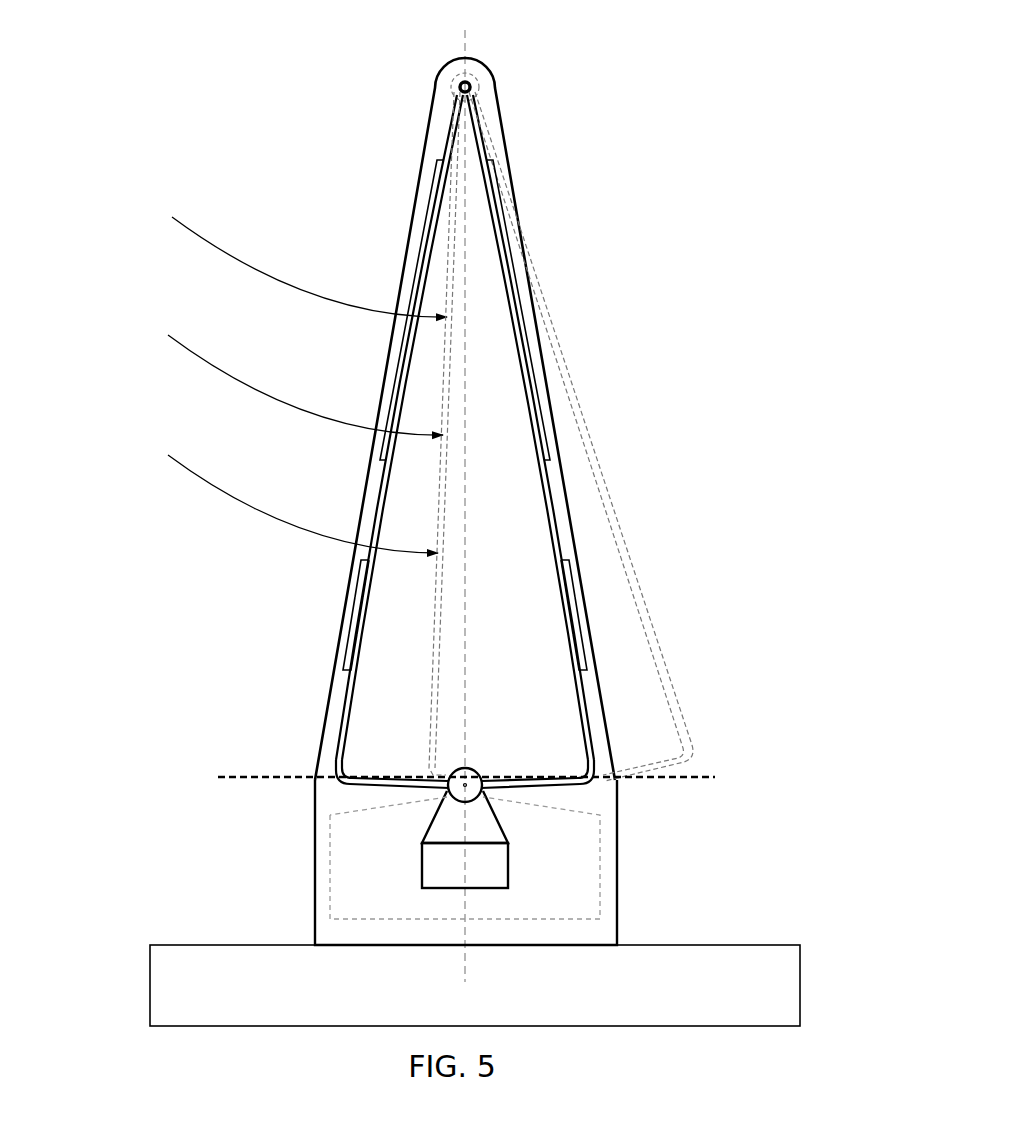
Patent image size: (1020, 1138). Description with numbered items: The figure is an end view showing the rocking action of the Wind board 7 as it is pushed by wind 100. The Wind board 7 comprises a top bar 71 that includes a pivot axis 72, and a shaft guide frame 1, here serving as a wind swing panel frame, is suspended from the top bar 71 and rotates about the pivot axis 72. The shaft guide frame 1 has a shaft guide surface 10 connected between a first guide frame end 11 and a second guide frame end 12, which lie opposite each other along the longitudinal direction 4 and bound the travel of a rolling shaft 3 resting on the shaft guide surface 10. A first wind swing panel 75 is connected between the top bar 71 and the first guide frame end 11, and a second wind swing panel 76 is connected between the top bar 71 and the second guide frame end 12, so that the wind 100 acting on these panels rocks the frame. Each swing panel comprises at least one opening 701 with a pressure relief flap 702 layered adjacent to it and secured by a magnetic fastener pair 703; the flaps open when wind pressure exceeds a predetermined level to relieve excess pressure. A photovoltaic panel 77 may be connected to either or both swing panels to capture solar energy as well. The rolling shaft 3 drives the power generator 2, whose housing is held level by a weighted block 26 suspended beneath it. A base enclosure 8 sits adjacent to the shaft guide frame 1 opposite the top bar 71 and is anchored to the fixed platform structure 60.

The Wind board 7 is at (332, 180).
The top bar 71 is at (476, 73).
The pivot axis 72 is at (470, 86).
The wind 100 is at (250, 262).
The photovoltaic panel 77 is at (425, 242).
The second wind swing panel 76 is at (595, 454).
The first wind swing panel 75 is at (442, 485).
The opening 701 is at (366, 577).
The pressure relief flap 702 is at (360, 612).
The magnetic fastener pair 703 is at (352, 660).
The first guide frame end 11 is at (325, 765).
The second guide frame end 12 is at (603, 765).
The shaft guide surface 10 is at (390, 778).
The shaft guide frame 1 is at (473, 486).
The power generator 2 is at (466, 782).
The rolling shaft 3 is at (468, 784).
The weighted block 26 is at (490, 866).
The base enclosure 8 is at (610, 918).
The fixed platform structure 60 is at (178, 982).
The longitudinal direction 4 is at (220, 778).